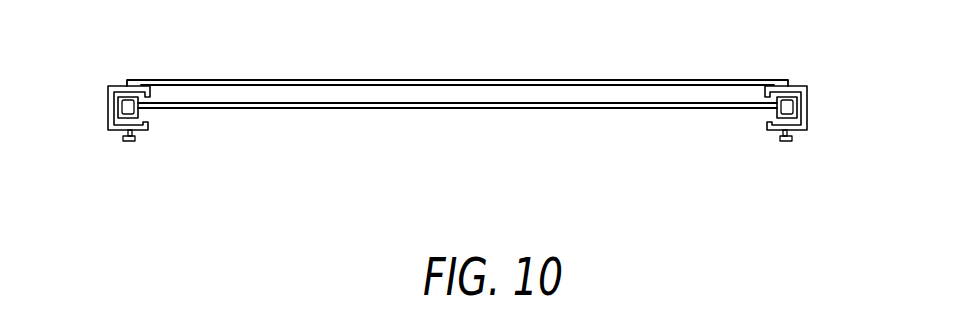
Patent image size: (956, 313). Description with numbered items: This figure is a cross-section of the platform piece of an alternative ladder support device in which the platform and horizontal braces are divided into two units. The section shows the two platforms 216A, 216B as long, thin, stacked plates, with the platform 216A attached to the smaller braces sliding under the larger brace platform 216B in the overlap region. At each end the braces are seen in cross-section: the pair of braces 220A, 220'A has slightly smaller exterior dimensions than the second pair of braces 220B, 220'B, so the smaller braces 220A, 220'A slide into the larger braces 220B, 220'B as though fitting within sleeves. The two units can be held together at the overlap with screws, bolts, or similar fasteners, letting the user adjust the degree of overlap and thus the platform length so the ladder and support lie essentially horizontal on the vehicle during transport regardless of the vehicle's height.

The platform 216A is at (513, 109).
The platform 216B is at (510, 79).
The horizontal brace 220A is at (142, 117).
The horizontal brace 220B is at (108, 117).
The horizontal brace 220'A is at (742, 152).
The horizontal brace 220'B is at (826, 71).